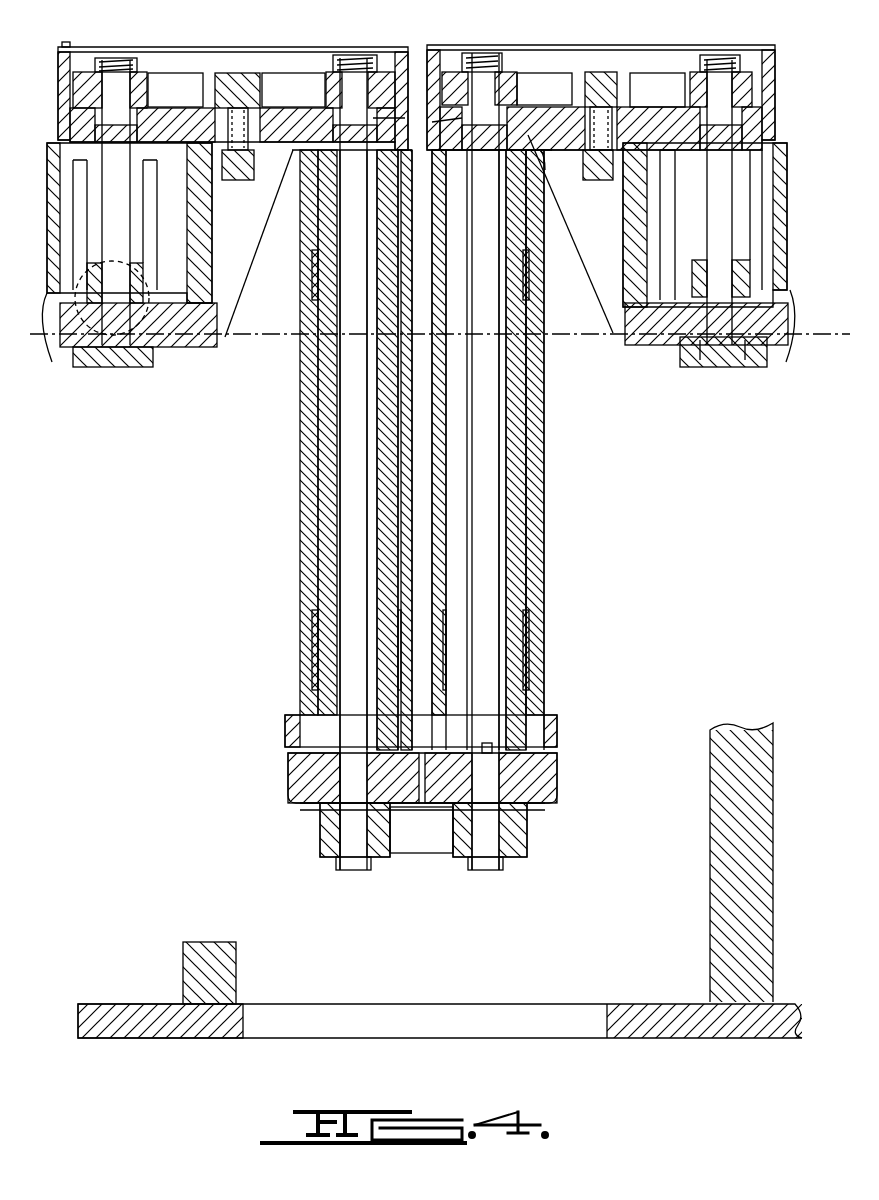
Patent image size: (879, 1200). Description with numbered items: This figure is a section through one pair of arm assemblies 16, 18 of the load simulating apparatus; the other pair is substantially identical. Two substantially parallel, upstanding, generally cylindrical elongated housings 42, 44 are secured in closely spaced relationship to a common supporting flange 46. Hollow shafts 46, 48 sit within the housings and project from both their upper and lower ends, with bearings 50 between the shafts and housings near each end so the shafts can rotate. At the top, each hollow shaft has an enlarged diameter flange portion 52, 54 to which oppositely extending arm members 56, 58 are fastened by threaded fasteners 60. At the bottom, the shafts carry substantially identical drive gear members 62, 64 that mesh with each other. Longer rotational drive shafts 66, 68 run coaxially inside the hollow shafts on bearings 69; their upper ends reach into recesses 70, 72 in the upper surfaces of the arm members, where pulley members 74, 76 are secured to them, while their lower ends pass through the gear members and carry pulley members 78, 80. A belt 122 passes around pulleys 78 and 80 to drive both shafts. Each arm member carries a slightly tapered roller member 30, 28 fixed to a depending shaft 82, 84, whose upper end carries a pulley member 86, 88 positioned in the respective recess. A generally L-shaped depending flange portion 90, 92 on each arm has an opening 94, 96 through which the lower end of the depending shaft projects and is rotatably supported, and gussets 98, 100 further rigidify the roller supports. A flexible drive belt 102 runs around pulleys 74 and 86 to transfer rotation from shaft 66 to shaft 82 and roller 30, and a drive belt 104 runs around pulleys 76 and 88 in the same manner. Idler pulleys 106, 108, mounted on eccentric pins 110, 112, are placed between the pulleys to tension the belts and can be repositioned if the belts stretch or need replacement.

The arm assembly 16 is at (545, 458).
The arm assembly 18 is at (295, 428).
The roller member 28 is at (788, 332).
The roller member 30 is at (58, 346).
The elongated housing 42 is at (300, 497).
The elongated housing 44 is at (535, 523).
The hollow shaft 46 is at (328, 525).
The hollow shaft 48 is at (513, 495).
The bearings 50 is at (312, 636).
The enlarged diameter flange portion 52 is at (260, 243).
The enlarged diameter flange portion 54 is at (545, 170).
The arm member 56 is at (70, 122).
The arm member 58 is at (765, 148).
The threaded fasteners 60 is at (538, 128).
The drive gear member 62 is at (300, 771).
The drive gear member 64 is at (548, 770).
The rotational drive shaft 66 is at (345, 452).
The rotational drive shaft 68 is at (497, 413).
The bearings 69 is at (598, 795).
The recess 70 is at (293, 62).
The recess 72 is at (663, 64).
The pulley member 74 is at (378, 75).
The pulley member 76 is at (510, 80).
The pulley member 78 is at (326, 833).
The pulley member 80 is at (517, 852).
The depending shaft 82 is at (115, 222).
The depending shaft 84 is at (713, 226).
The pulley member 86 is at (128, 72).
The pulley member 88 is at (745, 72).
The L-shaped depending flange portion 90 is at (202, 227).
The L-shaped depending flange portion 92 is at (625, 230).
The opening 94 is at (117, 337).
The opening 96 is at (723, 312).
The gusset 98 is at (223, 308).
The gusset 100 is at (598, 266).
The flexible drive belt 102 is at (173, 76).
The drive belt 104 is at (562, 80).
The idler pulley 106 is at (255, 70).
The idler pulley 108 is at (632, 83).
The eccentric pin 110 is at (235, 182).
The eccentric pin 112 is at (596, 180).
The belt 122 is at (530, 830).